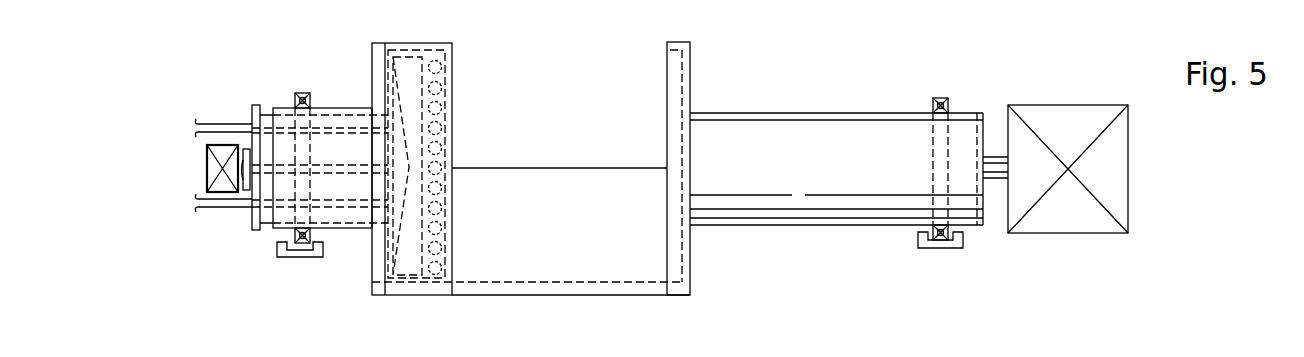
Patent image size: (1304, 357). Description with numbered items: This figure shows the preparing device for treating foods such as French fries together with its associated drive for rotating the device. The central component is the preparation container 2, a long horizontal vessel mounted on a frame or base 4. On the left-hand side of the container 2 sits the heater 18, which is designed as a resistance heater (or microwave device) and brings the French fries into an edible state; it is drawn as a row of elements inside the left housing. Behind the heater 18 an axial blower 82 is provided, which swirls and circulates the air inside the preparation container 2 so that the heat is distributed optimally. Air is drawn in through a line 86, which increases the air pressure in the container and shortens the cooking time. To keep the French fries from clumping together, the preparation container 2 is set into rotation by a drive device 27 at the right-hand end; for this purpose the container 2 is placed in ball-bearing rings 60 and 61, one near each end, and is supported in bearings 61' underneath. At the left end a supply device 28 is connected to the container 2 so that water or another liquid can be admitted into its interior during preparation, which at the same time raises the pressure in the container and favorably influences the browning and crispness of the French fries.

The preparation container 2 is at (751, 66).
The base frame 4 is at (572, 84).
The heater 18 is at (448, 62).
The drive device 27 is at (1068, 215).
The supply device 28 is at (222, 208).
The ball-bearing ring 60 is at (307, 92).
The ball-bearing ring 61 is at (941, 62).
The bearings 61' is at (620, 274).
The axial blower 82 is at (408, 265).
The line 86 is at (228, 123).